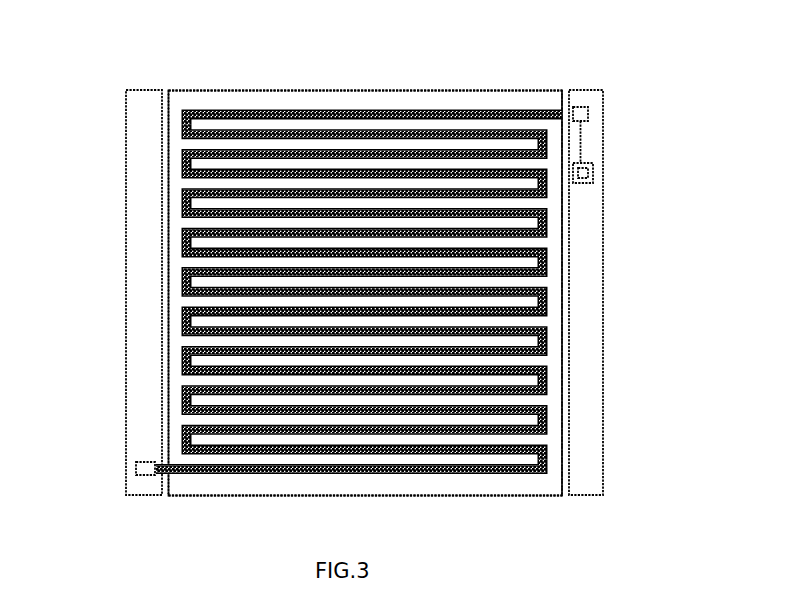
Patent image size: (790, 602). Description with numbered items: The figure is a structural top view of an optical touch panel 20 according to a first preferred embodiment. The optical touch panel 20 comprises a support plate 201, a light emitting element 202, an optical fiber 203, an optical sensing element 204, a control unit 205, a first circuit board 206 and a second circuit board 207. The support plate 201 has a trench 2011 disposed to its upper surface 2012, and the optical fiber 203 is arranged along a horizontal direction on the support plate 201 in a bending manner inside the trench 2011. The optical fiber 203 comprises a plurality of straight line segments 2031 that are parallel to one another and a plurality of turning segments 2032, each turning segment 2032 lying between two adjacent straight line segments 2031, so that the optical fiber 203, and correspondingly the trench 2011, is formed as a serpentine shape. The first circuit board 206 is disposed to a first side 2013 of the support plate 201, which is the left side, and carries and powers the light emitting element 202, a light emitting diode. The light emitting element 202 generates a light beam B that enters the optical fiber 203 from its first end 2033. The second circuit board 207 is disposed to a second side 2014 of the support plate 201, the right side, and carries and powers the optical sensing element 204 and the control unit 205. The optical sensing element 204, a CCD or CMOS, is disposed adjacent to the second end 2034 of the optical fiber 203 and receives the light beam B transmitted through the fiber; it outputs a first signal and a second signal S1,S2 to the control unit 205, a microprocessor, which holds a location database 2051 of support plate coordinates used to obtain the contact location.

The optical touch panel 20 is at (457, 50).
The support plate 201 is at (358, 97).
The trench 2011 is at (270, 110).
The upper surface 2012 is at (470, 100).
The first side 2013 is at (175, 188).
The second side 2014 is at (555, 353).
The light emitting element 202 is at (135, 474).
The optical fiber 203 is at (437, 472).
The straight line segments 2031 is at (527, 438).
The turning segments 2032 is at (546, 420).
The first end 2033 is at (181, 475).
The second end 2034 is at (548, 112).
The optical sensing element 204 is at (583, 107).
The control unit 205 is at (594, 176).
The location database 2051 is at (590, 167).
The first circuit board 206 is at (140, 260).
The second circuit board 207 is at (592, 275).
The light beam B is at (160, 464).
The first signal and second signal S1,S2 is at (578, 163).